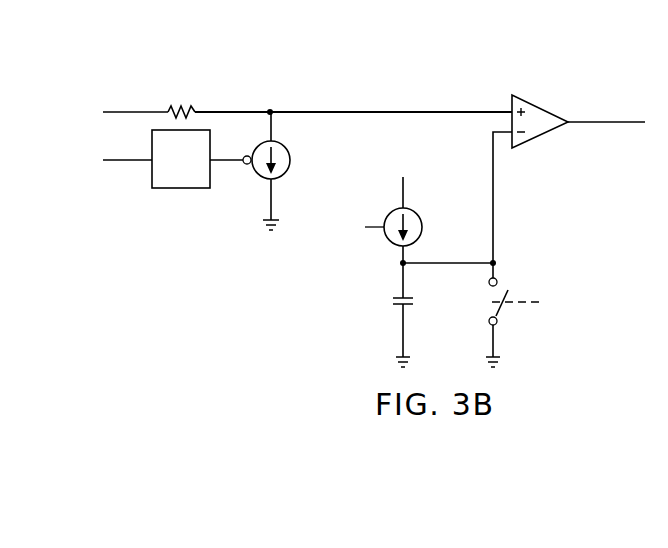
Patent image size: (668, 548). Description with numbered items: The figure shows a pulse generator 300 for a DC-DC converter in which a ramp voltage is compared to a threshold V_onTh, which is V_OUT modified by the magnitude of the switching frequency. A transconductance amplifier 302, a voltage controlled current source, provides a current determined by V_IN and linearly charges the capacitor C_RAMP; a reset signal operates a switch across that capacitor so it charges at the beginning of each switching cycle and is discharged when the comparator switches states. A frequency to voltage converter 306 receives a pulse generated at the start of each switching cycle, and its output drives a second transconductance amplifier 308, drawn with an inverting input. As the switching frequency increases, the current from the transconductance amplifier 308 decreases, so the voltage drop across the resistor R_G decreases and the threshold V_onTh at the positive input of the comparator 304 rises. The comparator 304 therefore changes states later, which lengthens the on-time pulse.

The pulse generator 300 is at (426, 56).
The transconductance amplifier 302 is at (419, 213).
The comparator 304 is at (542, 105).
The frequency to voltage converter 306 is at (180, 190).
The transconductance amplifier 308 is at (285, 174).